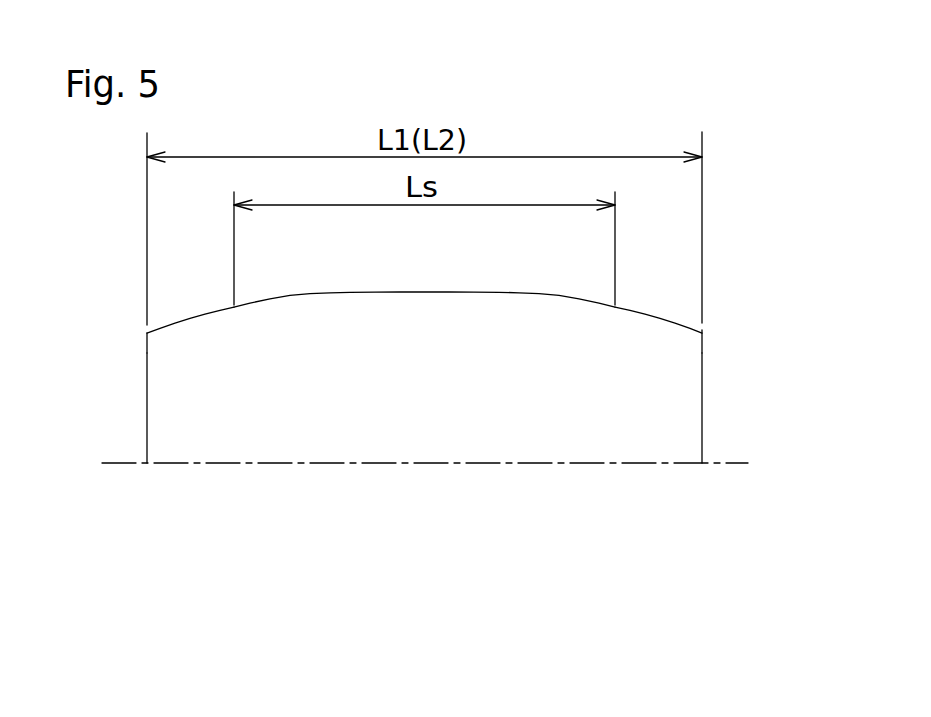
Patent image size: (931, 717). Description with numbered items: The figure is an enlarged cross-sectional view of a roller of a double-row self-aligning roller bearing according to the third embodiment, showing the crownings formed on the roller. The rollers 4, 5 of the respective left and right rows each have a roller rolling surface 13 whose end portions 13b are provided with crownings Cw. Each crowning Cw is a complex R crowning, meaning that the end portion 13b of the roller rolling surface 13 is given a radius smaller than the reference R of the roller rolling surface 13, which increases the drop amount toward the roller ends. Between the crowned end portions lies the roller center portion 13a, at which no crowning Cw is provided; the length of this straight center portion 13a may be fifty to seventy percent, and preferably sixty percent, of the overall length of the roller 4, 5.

The roller 4 is at (417, 450).
The roller 5 is at (426, 342).
The roller rolling surface 13 is at (529, 288).
The roller center portion 13a is at (423, 292).
The end portion of the roller rolling surface 13b is at (192, 316).
The crowning Cw is at (166, 324).